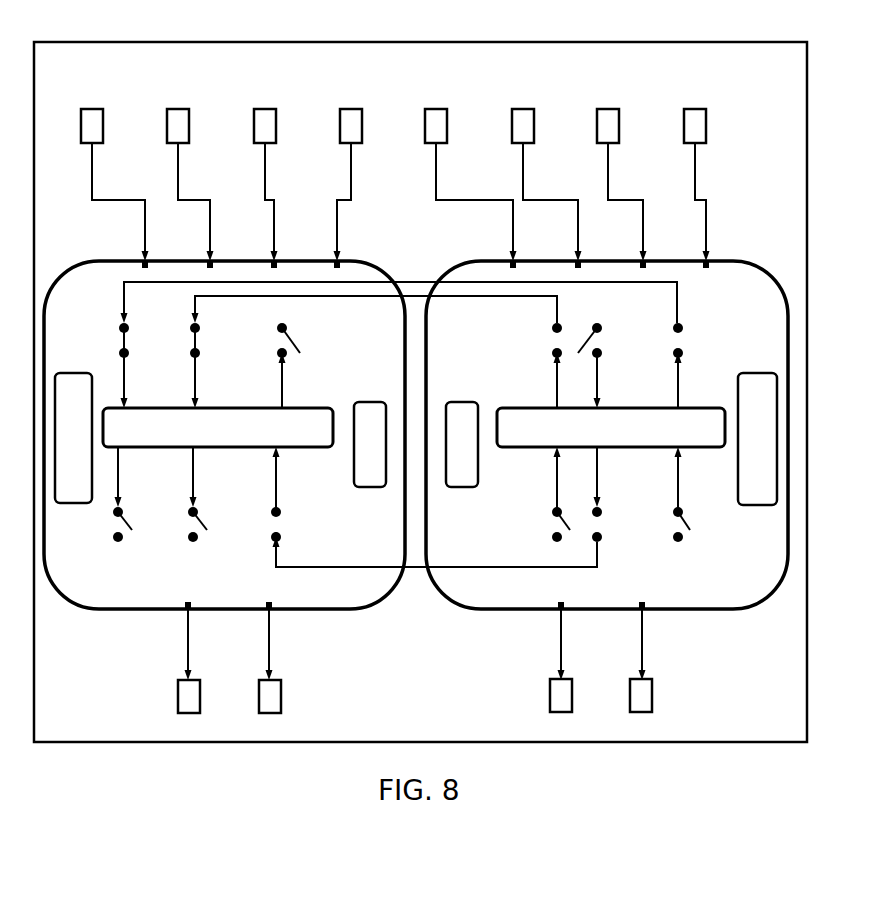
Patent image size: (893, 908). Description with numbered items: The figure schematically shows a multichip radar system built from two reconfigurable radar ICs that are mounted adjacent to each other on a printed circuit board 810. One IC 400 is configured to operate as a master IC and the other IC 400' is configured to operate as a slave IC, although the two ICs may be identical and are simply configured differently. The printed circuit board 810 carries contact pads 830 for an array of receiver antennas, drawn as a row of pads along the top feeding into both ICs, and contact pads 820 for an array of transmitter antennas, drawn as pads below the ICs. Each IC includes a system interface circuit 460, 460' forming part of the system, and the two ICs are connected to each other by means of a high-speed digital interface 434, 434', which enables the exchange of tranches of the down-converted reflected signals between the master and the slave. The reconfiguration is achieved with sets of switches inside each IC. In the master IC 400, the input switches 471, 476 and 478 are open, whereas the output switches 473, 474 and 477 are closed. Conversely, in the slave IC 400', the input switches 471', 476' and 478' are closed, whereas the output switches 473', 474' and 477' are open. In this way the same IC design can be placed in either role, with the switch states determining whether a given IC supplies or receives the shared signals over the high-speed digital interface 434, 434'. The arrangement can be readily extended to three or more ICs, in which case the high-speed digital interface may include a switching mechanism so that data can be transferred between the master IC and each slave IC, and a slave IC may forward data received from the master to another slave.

The printed circuit board 810 is at (771, 85).
The contact pads for receiver antennas 830 is at (520, 108).
The contact pads for transmitter antennas 820 is at (178, 693).
The reconfigurable IC configured as master IC 400 is at (607, 435).
The reconfigurable IC configured as slave IC 400' is at (224, 435).
The system interface circuit 460 is at (757, 439).
The system interface circuit 460' is at (73, 438).
The high-speed digital interface 434 is at (462, 444).
The high-speed digital interface 434' is at (370, 444).
The input switch 471 is at (526, 501).
The output switch 473 is at (625, 501).
The output switch 474 is at (527, 362).
The input switch 476 is at (618, 362).
The output switch 477 is at (708, 362).
The input switch 478 is at (708, 501).
The input switch 471' is at (308, 507).
The output switch 473' is at (227, 494).
The output switch 474' is at (320, 362).
The input switch 476' is at (228, 352).
The output switch 477' is at (92, 495).
The input switch 478' is at (93, 345).